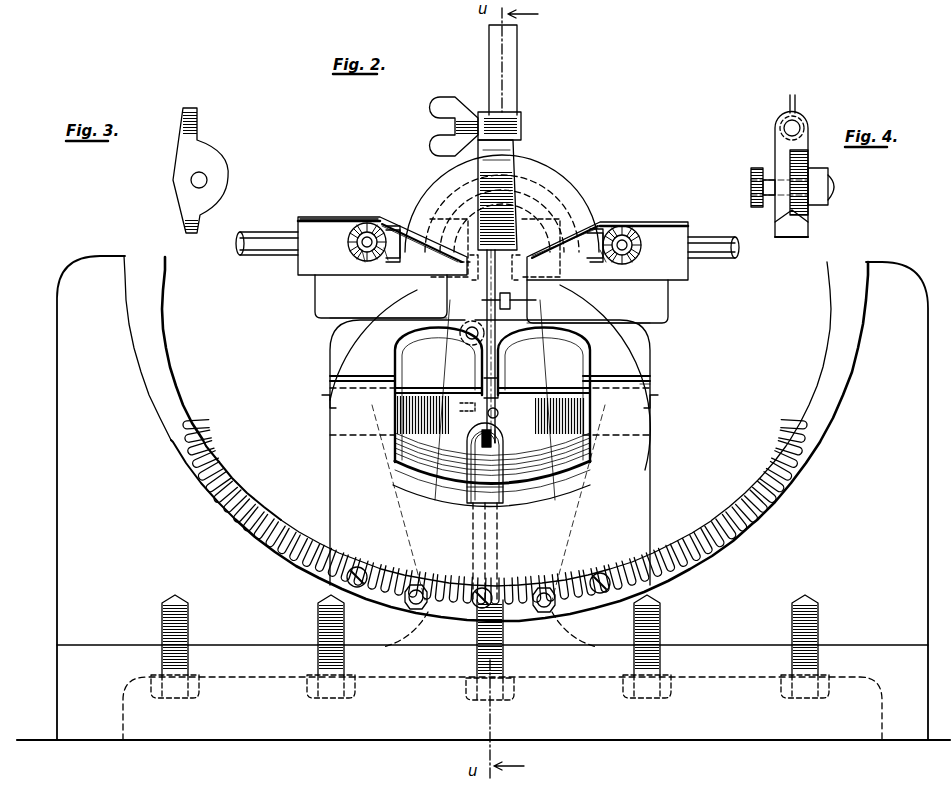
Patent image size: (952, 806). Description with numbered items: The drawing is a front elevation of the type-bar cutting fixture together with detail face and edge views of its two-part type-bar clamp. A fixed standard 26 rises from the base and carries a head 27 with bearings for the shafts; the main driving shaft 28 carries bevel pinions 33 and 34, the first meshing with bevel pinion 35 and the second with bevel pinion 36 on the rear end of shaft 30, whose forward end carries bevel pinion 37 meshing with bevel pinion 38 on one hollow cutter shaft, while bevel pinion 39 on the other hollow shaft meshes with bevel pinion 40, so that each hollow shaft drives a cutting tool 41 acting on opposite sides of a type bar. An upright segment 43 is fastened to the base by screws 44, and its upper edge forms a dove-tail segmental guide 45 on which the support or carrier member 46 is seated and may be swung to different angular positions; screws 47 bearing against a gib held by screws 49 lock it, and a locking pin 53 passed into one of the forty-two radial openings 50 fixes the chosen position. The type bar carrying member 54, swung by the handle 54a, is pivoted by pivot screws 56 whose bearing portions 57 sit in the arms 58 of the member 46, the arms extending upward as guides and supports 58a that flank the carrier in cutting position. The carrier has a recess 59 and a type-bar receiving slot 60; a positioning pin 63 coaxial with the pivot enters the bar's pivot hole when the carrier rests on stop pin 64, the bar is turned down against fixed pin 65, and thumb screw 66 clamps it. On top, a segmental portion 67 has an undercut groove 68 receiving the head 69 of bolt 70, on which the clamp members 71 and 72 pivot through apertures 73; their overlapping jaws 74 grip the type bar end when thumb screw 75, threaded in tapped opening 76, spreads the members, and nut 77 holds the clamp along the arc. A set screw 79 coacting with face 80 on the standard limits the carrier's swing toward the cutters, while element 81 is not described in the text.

In FIG. 2, the standard 26 is at (526, 350).
In FIG. 2, the head 27 is at (345, 226).
In FIG. 2, the main driving shaft 28 is at (276, 234).
In FIG. 2, the shaft 30 is at (362, 252).
In FIG. 2, the bevel pinion 33 is at (605, 224).
In FIG. 2, the bevel pinion 34 is at (384, 224).
In FIG. 2, the bevel pinion 35 is at (625, 224).
In FIG. 2, the bevel pinion 36 is at (370, 224).
In FIG. 2, the bevel pinion 37 is at (358, 243).
In FIG. 2, the bevel pinion 38 is at (386, 258).
In FIG. 2, the bevel pinion 39 is at (608, 256).
In FIG. 2, the bevel pinion 40 is at (642, 244).
In FIG. 2, the cutting tool 41 is at (420, 251).
In FIG. 2, the upright segment 43 is at (483, 498).
In FIG. 2, the screw 44 is at (300, 690).
In FIG. 2, the segmental guide 45 is at (496, 438).
In FIG. 2, the support or carrier member 46 is at (647, 481).
In FIG. 2, the screw 47 is at (408, 607).
In FIG. 2, the screw 49 is at (360, 570).
In FIG. 2, the radial opening 50 is at (224, 456).
In FIG. 2, the locking pin 53 is at (499, 491).
In FIG. 2, the type bar carrying member 54 is at (476, 346).
In FIG. 2, the handle 54a is at (517, 62).
In FIG. 2, the pivot screw 56 is at (491, 402).
In FIG. 2, the head-like bearing portion 57 is at (651, 390).
In FIG. 2, the standard or arm 58 is at (332, 430).
In FIG. 2, the guide and support 58a is at (445, 302).
In FIG. 2, the recess 59 is at (501, 384).
In FIG. 2, the type-bar receiving slot 60 is at (502, 256).
In FIG. 2, the type bar positioning pin 63 is at (488, 420).
In FIG. 2, the stop pin 64 is at (485, 511).
In FIG. 2, the fixed pin 65 is at (529, 266).
In FIG. 2, the thumb screw 66 is at (536, 301).
In FIG. 2, the segmental portion 67 is at (546, 181).
In FIG. 2, the undercut segmental groove 68 is at (572, 200).
In FIG. 4, the bolt head 69 is at (757, 177).
In FIG. 2, the bolt 70 is at (516, 156).
In FIG. 4, the bolt 70 is at (770, 198).
In FIG. 2, the clamp member 71 is at (482, 116).
In FIG. 3, the clamp member 71 is at (200, 170).
In FIG. 4, the clamp member 71 is at (805, 156).
In FIG. 2, the clamp member 72 is at (522, 120).
In FIG. 4, the clamp member 72 is at (775, 152).
In FIG. 3, the aperture 73 is at (207, 181).
In FIG. 2, the clamping jaw 74 is at (495, 248).
In FIG. 3, the clamping jaw 74 is at (198, 227).
In FIG. 4, the clamping jaw 74 is at (792, 238).
In FIG. 2, the thumb screw 75 is at (432, 112).
In FIG. 4, the thumb screw 75 is at (796, 100).
In FIG. 3, the tapped opening 76 is at (200, 108).
In FIG. 4, the nut 77 is at (824, 201).
In FIG. 2, the set screw 79 is at (471, 346).
In FIG. 2, the face 80 is at (491, 299).
In FIG. 2, the cap 81 is at (333, 218).